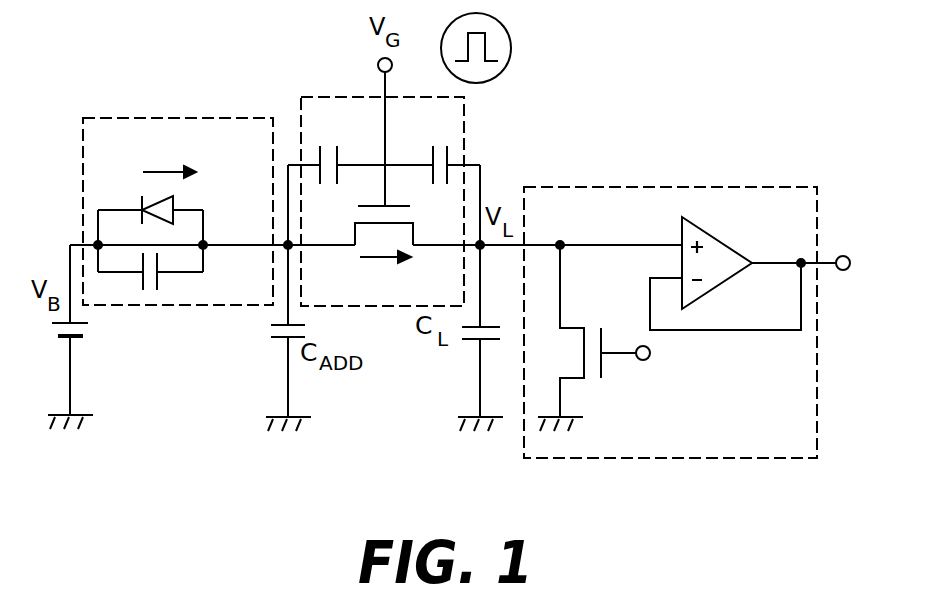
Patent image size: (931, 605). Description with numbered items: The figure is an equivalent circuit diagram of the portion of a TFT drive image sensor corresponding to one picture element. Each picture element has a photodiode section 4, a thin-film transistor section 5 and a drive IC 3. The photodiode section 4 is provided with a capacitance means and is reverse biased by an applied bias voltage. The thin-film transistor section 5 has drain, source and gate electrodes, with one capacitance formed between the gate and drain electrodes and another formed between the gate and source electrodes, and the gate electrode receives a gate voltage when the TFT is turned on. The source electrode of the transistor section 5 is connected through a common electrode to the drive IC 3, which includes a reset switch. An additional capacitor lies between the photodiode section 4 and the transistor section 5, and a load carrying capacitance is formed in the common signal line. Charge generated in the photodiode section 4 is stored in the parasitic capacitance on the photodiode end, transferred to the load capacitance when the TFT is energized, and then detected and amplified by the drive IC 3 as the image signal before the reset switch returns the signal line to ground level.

The drive IC 3 is at (690, 187).
The photodiode section 4 is at (183, 115).
The thin-film transistor section 5 is at (466, 192).